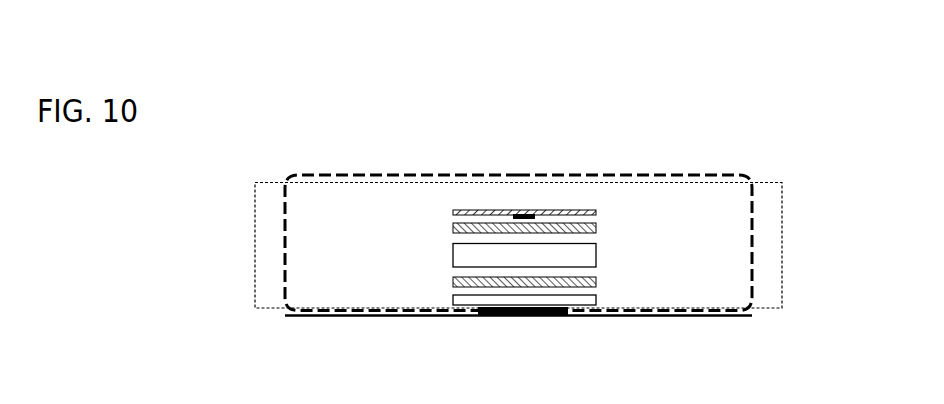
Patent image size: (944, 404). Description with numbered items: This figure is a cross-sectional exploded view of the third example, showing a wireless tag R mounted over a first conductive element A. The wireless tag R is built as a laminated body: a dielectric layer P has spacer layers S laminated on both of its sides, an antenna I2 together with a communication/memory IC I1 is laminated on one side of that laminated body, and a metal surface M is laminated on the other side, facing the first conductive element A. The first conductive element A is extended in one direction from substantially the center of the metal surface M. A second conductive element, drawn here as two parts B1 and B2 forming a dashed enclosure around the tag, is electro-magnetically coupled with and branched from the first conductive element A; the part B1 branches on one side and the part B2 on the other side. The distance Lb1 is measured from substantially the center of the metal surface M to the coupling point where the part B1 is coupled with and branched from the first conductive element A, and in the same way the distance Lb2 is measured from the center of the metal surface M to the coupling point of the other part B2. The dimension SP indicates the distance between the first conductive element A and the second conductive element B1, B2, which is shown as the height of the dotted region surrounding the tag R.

The second conductive element B1 is at (708, 174).
The second conductive element B2 is at (350, 175).
The IC having communication/memory functions I1 is at (510, 216).
The antenna I2 is at (597, 212).
The spacer layer S is at (597, 228).
The dielectric layer P is at (588, 260).
The metal surface M is at (548, 296).
The wireless tag R is at (555, 252).
The first conductive element A is at (410, 314).
The distance between first conductive element and second conductive element SP is at (762, 175).
The distance between metal surface and second conductive element Lb1 is at (752, 382).
The distance between metal surface and second conductive element Lb2 is at (527, 381).